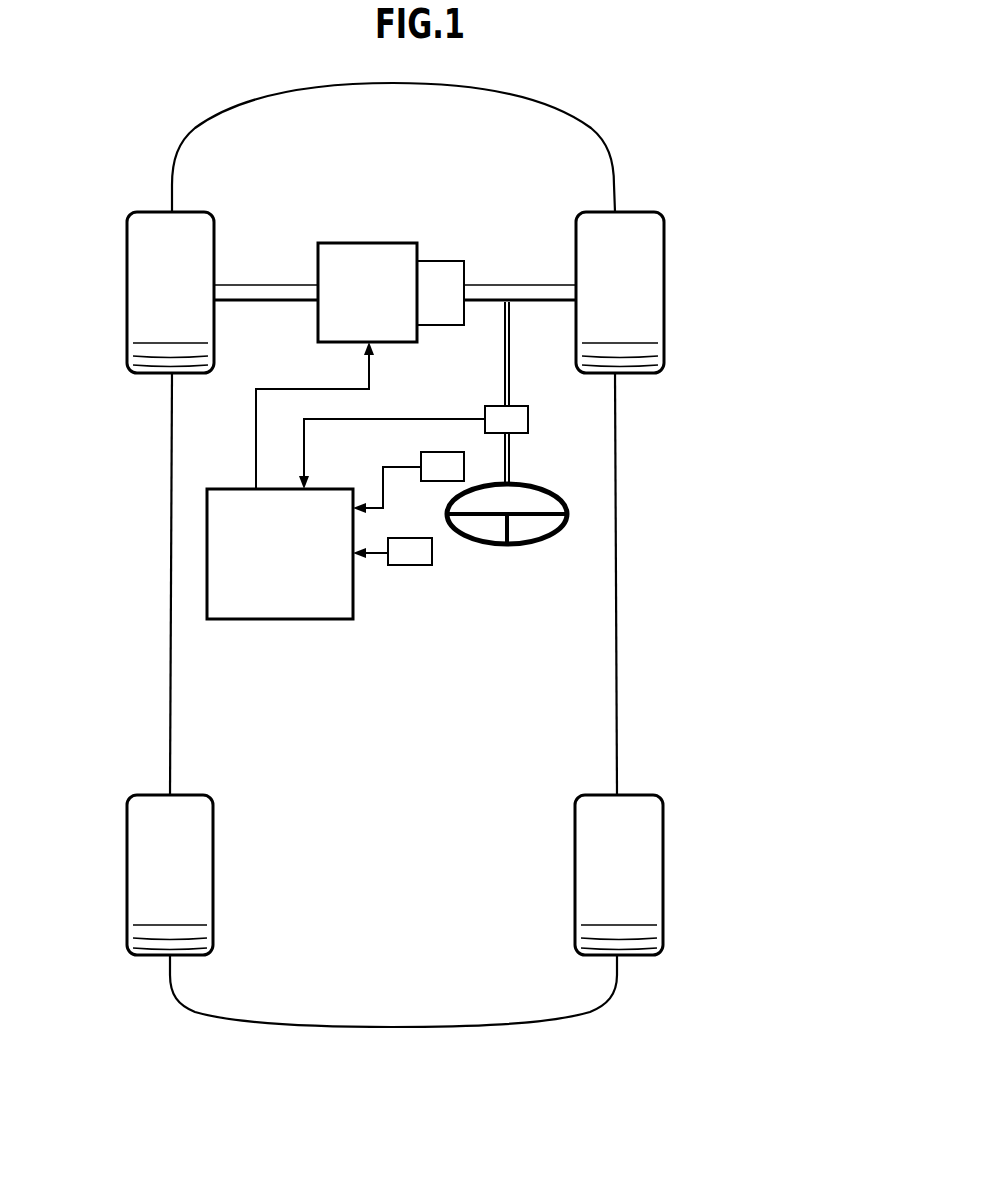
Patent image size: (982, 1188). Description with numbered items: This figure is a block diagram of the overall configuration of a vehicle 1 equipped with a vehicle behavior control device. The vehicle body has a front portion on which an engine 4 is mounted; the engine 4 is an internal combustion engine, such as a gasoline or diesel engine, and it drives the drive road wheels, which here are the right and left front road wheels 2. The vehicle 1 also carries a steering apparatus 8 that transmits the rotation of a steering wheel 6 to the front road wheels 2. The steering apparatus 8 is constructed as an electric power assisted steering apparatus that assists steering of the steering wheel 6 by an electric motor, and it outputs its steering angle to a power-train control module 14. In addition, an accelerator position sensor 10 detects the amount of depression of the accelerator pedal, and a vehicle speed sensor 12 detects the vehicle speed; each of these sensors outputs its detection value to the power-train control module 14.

The vehicle 1 is at (617, 108).
The front road wheels 2 is at (127, 289).
The engine 4 is at (364, 243).
The steering wheel 6 is at (541, 482).
The steering apparatus 8 is at (528, 419).
The accelerator position sensor 10 is at (441, 452).
The vehicle speed sensor 12 is at (408, 565).
The power-train control module 14 is at (223, 489).